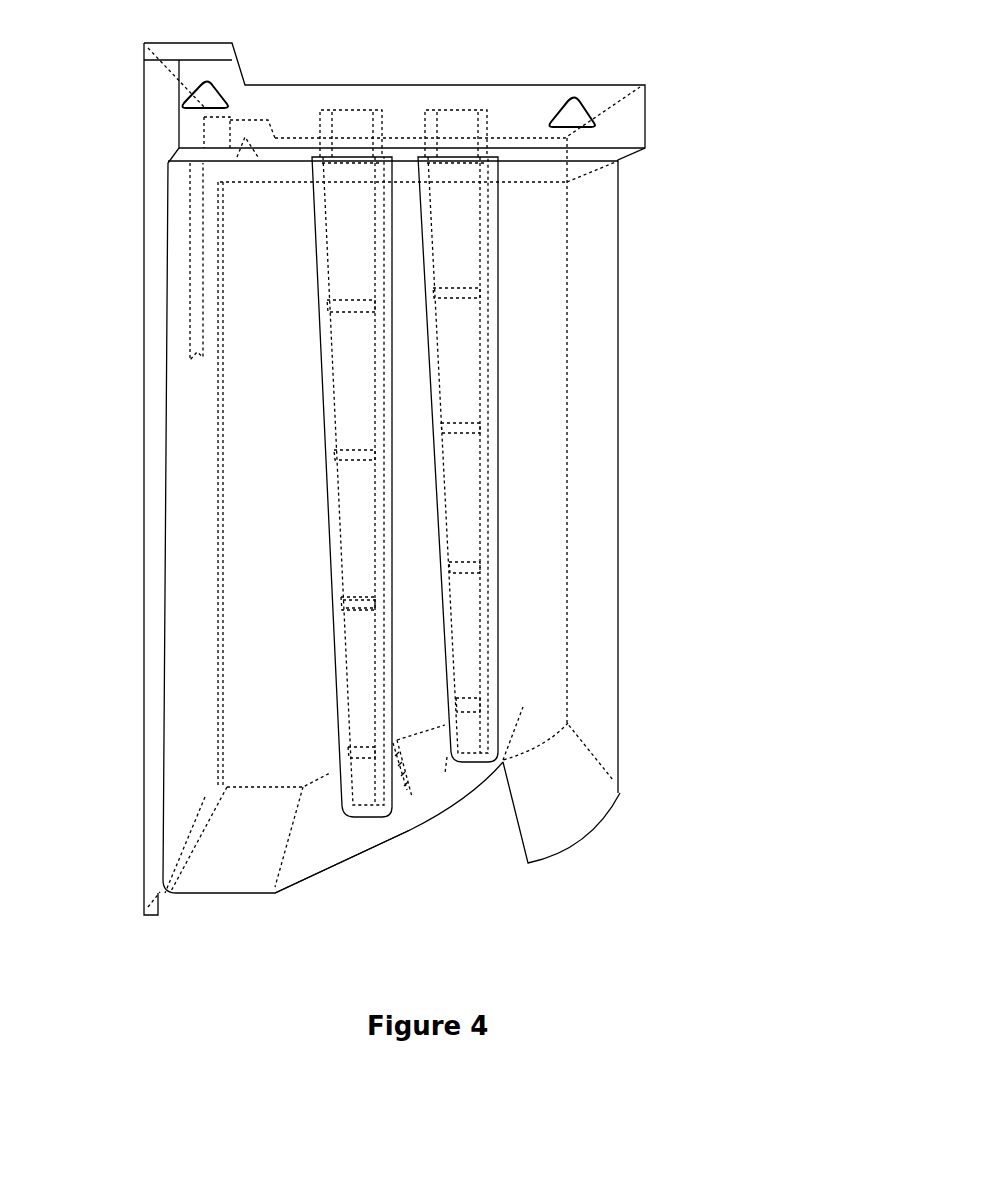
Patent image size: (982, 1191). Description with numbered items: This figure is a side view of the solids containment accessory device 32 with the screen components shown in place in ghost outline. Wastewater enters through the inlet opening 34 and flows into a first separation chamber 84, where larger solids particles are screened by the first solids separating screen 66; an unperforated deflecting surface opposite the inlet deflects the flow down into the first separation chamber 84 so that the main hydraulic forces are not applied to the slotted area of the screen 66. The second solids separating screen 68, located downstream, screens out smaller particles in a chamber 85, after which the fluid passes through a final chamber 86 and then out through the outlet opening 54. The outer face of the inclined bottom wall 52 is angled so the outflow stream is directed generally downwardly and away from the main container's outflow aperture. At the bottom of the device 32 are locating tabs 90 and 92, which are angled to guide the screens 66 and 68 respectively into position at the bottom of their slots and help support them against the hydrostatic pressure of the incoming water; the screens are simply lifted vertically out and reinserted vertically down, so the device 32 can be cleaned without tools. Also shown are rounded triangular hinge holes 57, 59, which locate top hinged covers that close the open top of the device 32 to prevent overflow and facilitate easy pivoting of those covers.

The solids containment accessory device 32 is at (150, 543).
The inlet opening 34 is at (187, 267).
The inclined bottom wall 52 is at (342, 867).
The outlet opening 54 is at (520, 827).
The hinge hole 57 is at (208, 90).
The hinge hole 59 is at (575, 105).
The first solids separating screen 66 is at (357, 342).
The second solids separating screen 68 is at (462, 338).
The first separation chamber 84 is at (252, 433).
The chamber 85 is at (405, 583).
The final chamber 86 is at (525, 543).
The locating tab 90 is at (397, 740).
The locating tab 92 is at (503, 757).